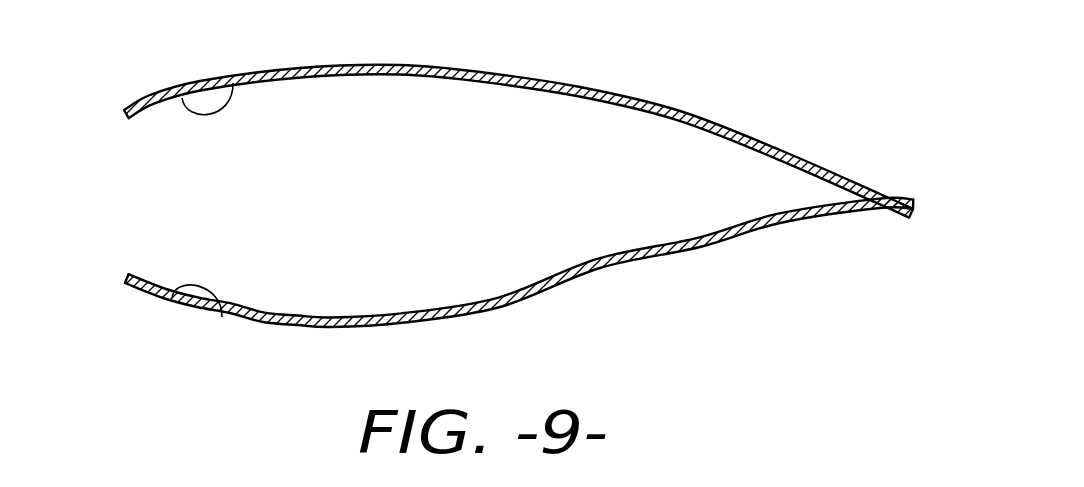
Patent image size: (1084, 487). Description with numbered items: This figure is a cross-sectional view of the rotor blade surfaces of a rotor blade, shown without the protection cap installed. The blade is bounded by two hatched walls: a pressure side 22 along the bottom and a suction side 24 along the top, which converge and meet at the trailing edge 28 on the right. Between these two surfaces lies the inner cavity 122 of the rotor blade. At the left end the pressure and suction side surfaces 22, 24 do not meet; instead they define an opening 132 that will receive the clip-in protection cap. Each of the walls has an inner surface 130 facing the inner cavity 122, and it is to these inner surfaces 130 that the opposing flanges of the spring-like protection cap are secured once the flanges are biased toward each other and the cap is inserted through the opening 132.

The pressure side 22 is at (390, 325).
The suction side 24 is at (550, 82).
The trailing edge 28 is at (913, 210).
The inner cavity 122 is at (392, 205).
The inner surface 130 is at (233, 83).
The opening 132 is at (118, 193).